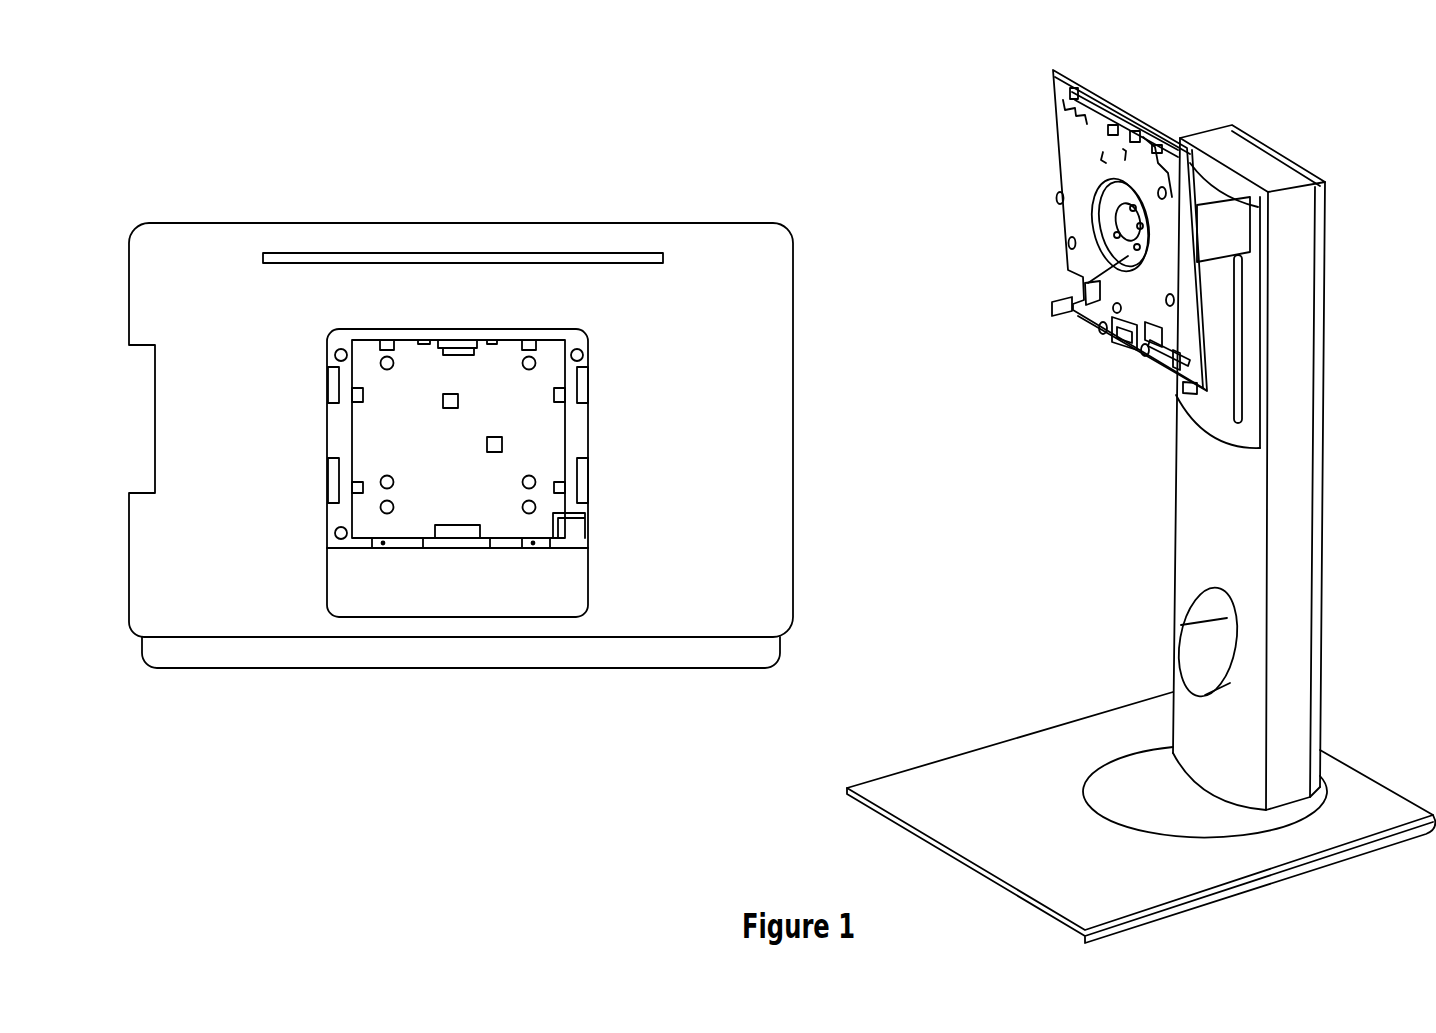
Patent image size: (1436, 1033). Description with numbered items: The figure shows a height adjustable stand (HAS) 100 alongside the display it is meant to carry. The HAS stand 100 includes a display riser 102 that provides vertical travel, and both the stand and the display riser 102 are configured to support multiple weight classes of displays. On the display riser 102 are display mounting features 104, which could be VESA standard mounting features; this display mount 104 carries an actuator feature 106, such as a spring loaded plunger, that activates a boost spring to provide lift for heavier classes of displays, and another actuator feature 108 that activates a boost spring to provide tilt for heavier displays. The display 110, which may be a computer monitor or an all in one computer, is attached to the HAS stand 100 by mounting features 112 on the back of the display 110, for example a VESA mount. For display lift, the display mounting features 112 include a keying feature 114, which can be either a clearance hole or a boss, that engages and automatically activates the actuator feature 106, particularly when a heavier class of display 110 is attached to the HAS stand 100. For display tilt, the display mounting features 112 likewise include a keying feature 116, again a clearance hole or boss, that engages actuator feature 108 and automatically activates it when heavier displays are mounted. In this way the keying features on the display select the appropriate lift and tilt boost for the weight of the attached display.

The height adjustable stand 100 is at (1254, 65).
The display riser 102 is at (1252, 385).
The display mounting features 104 is at (1098, 91).
The actuator feature 106 is at (1113, 212).
The actuator feature 108 is at (1128, 272).
The display 110 is at (777, 208).
The display mounting features 112 is at (588, 575).
The keying feature 114 is at (440, 401).
The keying feature 116 is at (505, 445).